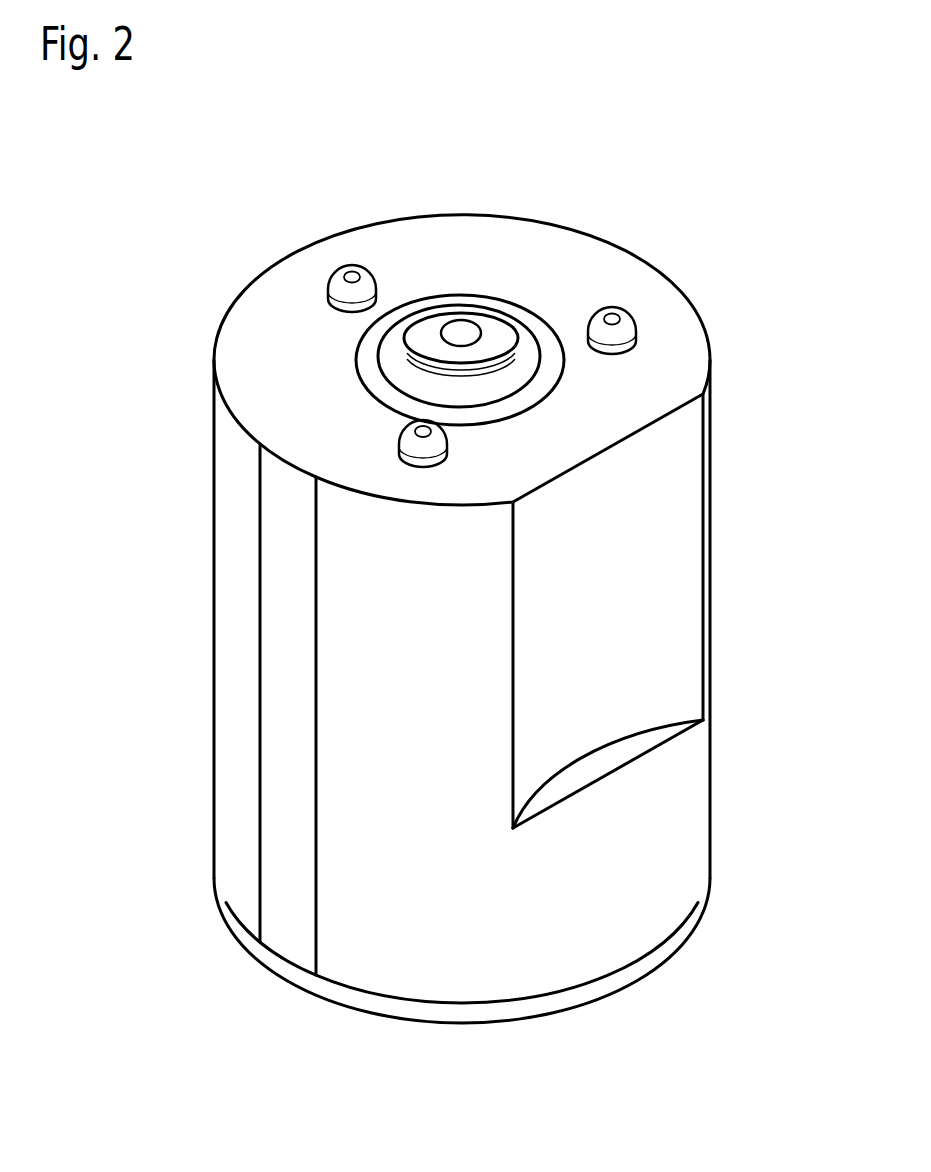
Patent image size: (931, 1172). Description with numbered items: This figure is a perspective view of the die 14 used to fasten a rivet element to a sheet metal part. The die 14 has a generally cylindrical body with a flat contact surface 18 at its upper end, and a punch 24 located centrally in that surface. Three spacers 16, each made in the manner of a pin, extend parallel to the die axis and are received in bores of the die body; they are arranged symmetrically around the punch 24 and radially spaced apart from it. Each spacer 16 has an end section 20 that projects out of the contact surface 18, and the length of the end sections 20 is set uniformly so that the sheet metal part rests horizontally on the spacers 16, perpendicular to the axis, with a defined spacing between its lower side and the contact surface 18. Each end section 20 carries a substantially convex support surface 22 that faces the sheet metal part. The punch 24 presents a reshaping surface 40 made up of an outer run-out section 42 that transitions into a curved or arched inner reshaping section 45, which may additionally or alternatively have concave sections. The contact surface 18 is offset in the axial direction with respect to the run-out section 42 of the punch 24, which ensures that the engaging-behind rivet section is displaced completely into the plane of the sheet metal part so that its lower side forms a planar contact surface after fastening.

The die 14 is at (672, 848).
The spacers 16 is at (338, 290).
The contact surface 18 is at (512, 248).
The end section 20 is at (363, 285).
The support surface 22 is at (347, 272).
The punch 24 is at (510, 324).
The reshaping surface 40 is at (535, 378).
The run-out section 42 is at (517, 400).
The reshaping section 45 is at (392, 357).